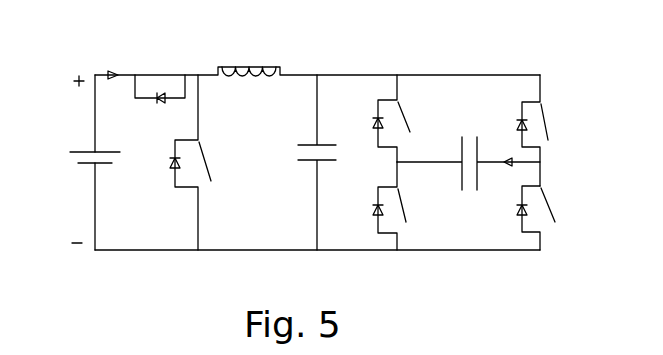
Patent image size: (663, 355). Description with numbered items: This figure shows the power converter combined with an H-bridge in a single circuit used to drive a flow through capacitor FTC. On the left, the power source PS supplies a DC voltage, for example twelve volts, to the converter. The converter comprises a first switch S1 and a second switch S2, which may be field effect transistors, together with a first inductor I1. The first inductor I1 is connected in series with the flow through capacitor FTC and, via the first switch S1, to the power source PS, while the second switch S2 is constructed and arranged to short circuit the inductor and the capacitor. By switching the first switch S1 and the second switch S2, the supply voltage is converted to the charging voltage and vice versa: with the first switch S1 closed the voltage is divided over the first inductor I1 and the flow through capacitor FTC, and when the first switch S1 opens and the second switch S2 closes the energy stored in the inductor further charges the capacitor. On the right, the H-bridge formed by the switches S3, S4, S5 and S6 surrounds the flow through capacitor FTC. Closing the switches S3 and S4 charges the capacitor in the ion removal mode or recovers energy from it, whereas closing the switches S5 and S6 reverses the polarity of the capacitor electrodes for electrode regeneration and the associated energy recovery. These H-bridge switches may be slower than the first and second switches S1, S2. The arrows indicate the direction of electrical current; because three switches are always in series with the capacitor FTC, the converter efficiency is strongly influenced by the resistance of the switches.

The power source PS is at (78, 175).
The first switch S1 is at (133, 73).
The second switch S2 is at (203, 148).
The switch S3 is at (543, 101).
The switch S4 is at (392, 187).
The switch S5 is at (393, 100).
The switch S6 is at (542, 187).
The first inductor I1 is at (249, 51).
The flow through capacitor FTC is at (468, 145).